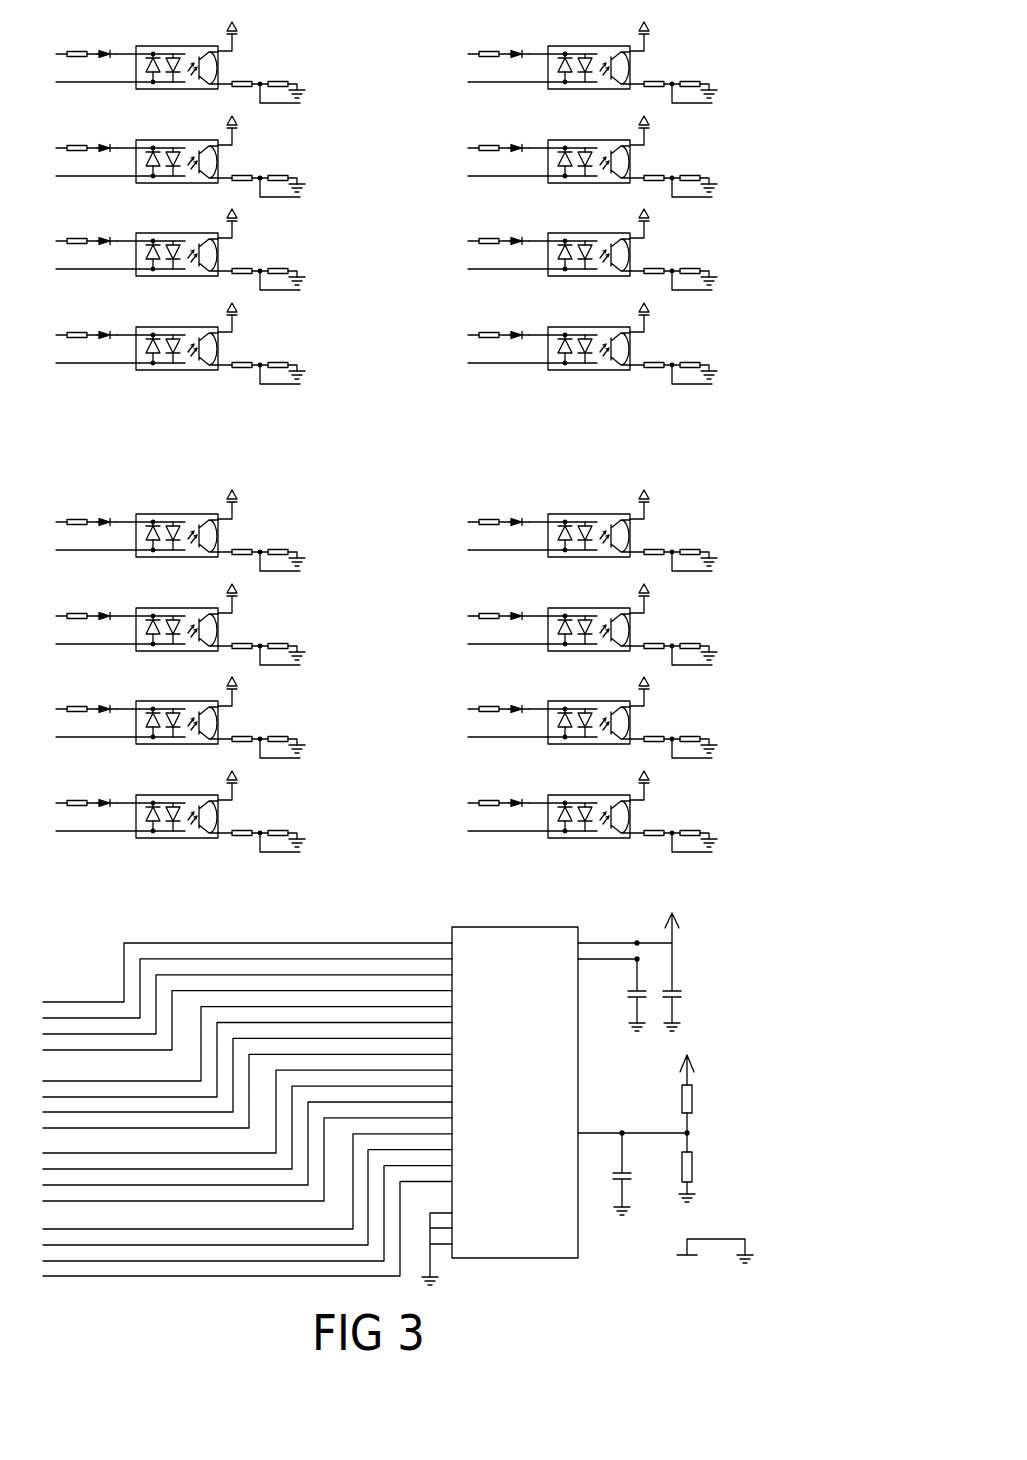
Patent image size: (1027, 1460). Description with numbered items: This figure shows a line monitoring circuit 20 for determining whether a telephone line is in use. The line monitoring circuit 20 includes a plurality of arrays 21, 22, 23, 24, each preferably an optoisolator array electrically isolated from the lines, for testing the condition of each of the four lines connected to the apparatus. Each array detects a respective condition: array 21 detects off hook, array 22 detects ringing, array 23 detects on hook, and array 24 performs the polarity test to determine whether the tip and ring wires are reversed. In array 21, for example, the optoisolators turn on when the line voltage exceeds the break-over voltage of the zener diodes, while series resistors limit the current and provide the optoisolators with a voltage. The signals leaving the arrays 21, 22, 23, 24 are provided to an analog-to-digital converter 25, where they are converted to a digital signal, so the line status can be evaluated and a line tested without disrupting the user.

The line monitoring circuit 20 is at (683, 25).
The off-hook optoisolator array 21 is at (246, 382).
The ringing optoisolator array 22 is at (250, 851).
The on-hook optoisolator array 23 is at (658, 378).
The polarity reversed optoisolator array 24 is at (662, 850).
The analog-to-digital converter 25 is at (520, 1268).